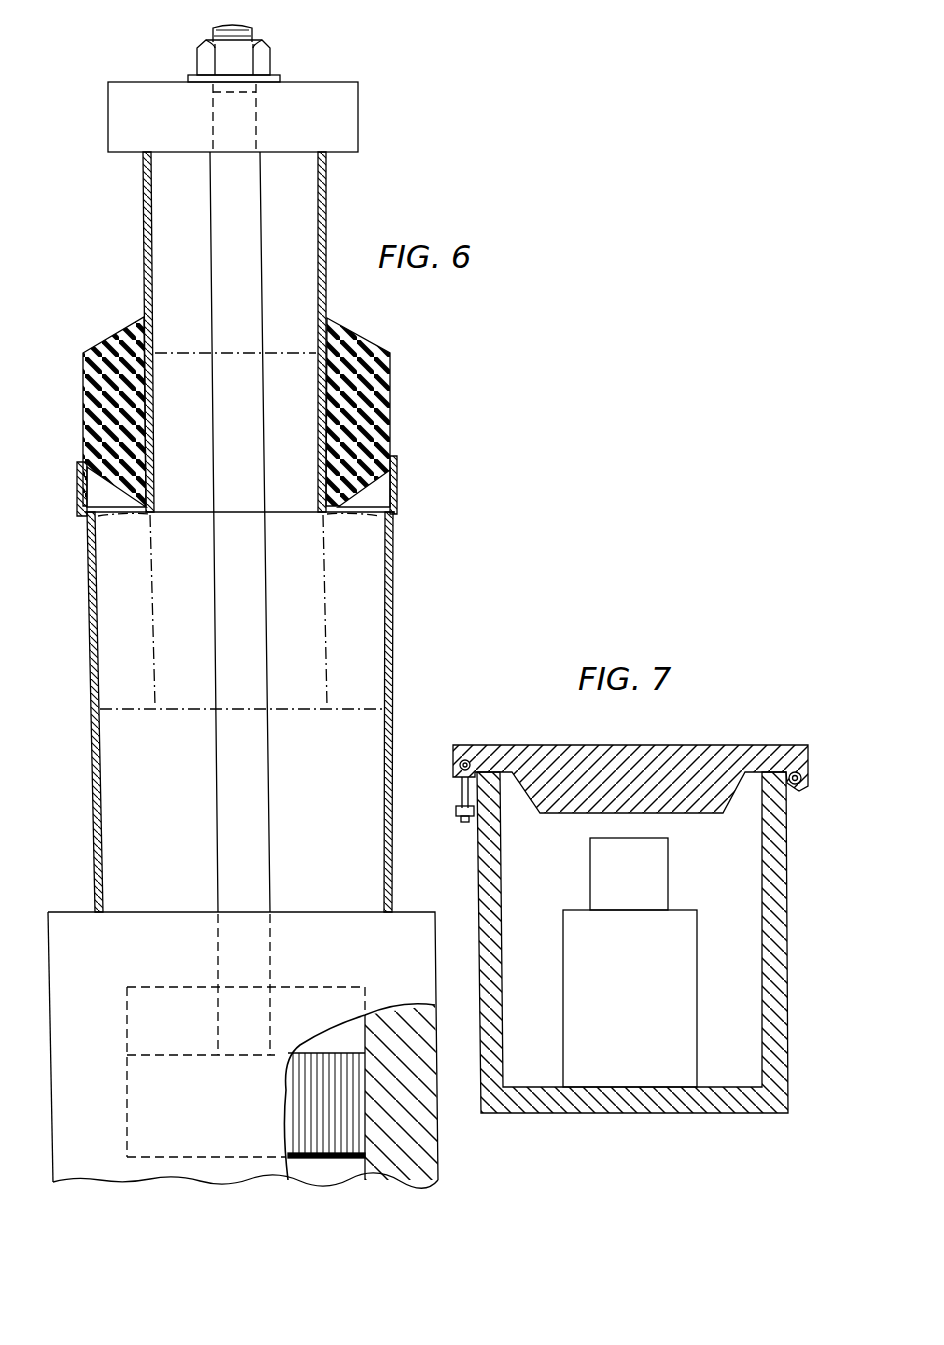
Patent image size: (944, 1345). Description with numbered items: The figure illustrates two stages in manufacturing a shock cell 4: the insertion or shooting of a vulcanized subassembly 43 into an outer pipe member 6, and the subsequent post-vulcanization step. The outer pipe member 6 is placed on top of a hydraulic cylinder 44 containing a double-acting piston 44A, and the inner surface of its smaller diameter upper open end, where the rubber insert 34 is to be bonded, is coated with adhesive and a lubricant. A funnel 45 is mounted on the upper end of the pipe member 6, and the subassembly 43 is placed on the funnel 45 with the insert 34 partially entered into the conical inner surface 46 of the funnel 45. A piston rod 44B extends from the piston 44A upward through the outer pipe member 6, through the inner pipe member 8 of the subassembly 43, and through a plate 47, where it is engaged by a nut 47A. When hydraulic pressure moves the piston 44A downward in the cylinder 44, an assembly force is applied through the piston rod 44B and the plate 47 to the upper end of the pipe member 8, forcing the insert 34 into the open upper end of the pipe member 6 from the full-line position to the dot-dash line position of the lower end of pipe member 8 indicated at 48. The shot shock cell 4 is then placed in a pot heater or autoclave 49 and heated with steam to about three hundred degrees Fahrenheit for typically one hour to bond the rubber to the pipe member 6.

In FIG. 6, the nut 47A is at (262, 53).
In FIG. 6, the plate 47 is at (333, 112).
In FIG. 6, the inner pipe member 8 is at (145, 242).
In FIG. 6, the subassembly 43 is at (262, 416).
In FIG. 6, the insert 34 is at (363, 403).
In FIG. 6, the funnel 45 is at (397, 500).
In FIG. 6, the conical inner surface 46 is at (100, 490).
In FIG. 6, the outer pipe member 6 is at (393, 634).
In FIG. 6, the dot-dash line position 48 is at (207, 703).
In FIG. 6, the piston rod 44B is at (245, 794).
In FIG. 6, the hydraulic cylinder 44 is at (327, 940).
In FIG. 6, the double-acting piston 44A is at (325, 1100).
In FIG. 7, the pot heater 49 is at (702, 735).
In FIG. 7, the shock cell 4 is at (708, 953).